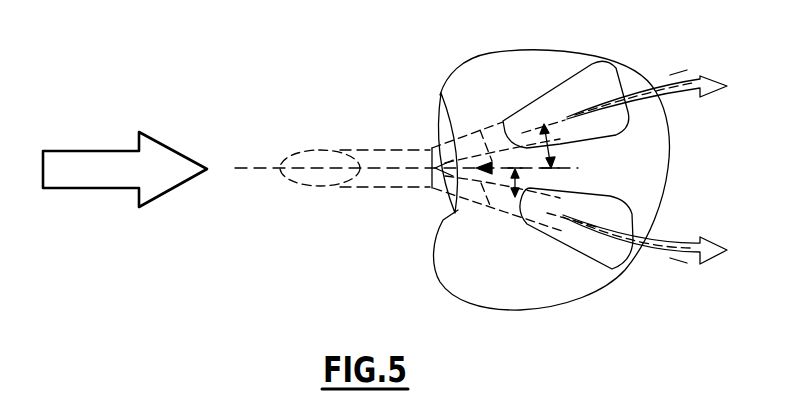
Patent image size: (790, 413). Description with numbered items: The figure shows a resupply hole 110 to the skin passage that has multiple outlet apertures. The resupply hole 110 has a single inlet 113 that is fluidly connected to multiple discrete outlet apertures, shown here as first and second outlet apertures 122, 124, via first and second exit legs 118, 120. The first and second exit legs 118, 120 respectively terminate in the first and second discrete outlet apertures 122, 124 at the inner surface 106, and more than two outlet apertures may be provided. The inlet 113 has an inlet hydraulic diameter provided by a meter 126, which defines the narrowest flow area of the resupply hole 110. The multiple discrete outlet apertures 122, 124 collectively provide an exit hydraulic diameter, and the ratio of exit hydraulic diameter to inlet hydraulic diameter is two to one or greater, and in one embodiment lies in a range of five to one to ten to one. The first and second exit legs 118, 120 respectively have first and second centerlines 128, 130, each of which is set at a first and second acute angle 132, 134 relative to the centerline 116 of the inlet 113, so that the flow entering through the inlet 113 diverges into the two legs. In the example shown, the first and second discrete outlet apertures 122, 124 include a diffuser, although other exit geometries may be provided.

The inner surface 106 is at (625, 66).
The resupply hole 110 is at (369, 128).
The inlet 113 is at (290, 152).
The centerline 116 is at (320, 172).
The first exit leg 118 is at (503, 121).
The second exit leg 120 is at (455, 205).
The first outlet aperture 122 is at (640, 106).
The second outlet aperture 124 is at (608, 266).
The meter 126 is at (444, 117).
The first centerline 128 is at (526, 118).
The second centerline 130 is at (553, 209).
The first acute angle 132 is at (573, 145).
The second acute angle 134 is at (513, 195).